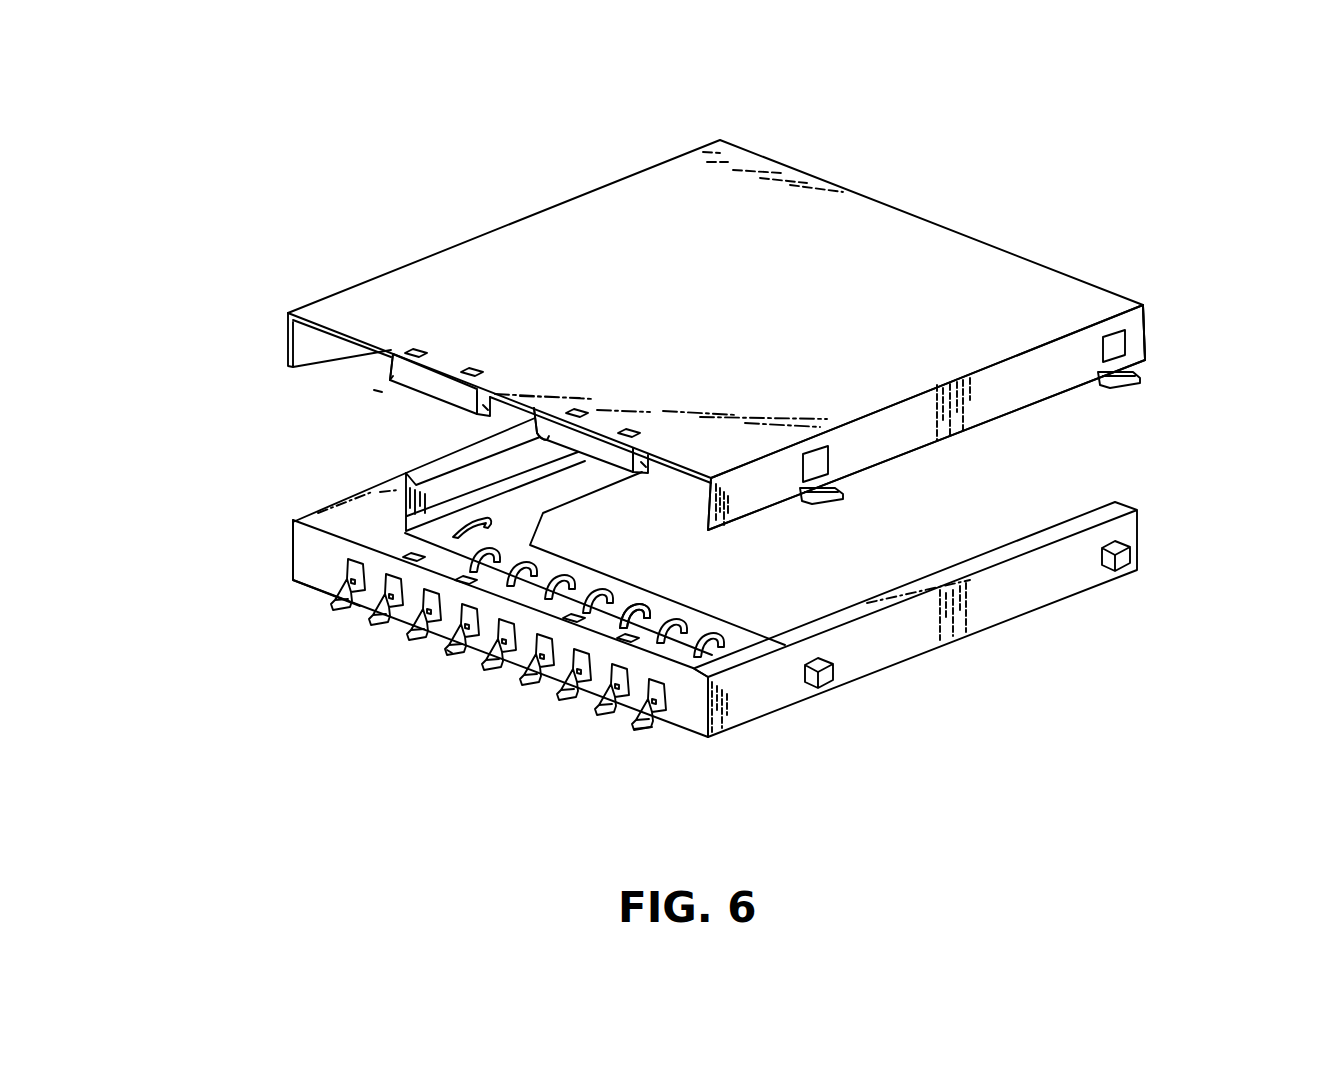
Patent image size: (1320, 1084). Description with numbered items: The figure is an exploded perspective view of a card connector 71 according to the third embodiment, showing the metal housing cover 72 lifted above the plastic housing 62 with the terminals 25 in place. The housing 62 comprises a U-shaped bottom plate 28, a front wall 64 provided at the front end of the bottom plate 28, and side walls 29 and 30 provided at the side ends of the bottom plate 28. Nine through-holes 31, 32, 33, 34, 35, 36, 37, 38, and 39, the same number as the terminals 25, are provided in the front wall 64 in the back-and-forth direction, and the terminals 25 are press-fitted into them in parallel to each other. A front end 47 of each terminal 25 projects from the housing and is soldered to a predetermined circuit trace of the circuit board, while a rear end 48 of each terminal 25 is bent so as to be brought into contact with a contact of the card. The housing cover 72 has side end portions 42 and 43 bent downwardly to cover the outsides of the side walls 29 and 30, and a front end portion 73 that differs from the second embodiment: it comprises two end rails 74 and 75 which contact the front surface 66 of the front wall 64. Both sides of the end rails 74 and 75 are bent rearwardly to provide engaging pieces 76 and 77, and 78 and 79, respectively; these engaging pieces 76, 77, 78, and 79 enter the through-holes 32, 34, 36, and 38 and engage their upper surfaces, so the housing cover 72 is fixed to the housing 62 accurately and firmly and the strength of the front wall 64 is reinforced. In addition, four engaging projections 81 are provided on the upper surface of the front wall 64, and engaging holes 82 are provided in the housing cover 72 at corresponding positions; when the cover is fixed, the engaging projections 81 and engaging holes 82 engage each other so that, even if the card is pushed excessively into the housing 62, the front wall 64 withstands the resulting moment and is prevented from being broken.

The terminal 25 is at (633, 732).
The bottom plate 28 is at (717, 637).
The side wall 29 is at (1055, 583).
The side wall 30 is at (406, 473).
The through-hole 31 is at (345, 585).
The through-hole 32 is at (380, 600).
The through-hole 33 is at (418, 615).
The through-hole 34 is at (447, 640).
The through-hole 35 is at (492, 655).
The through-hole 36 is at (522, 670).
The through-hole 37 is at (562, 685).
The through-hole 38 is at (599, 700).
The through-hole 39 is at (636, 715).
The side end portion 42 is at (1005, 395).
The side end portion 43 is at (300, 345).
The front end 47 is at (449, 648).
The rear end 48 is at (645, 612).
The housing 62 is at (997, 623).
The front wall 64 is at (700, 672).
The front surface 66 is at (315, 565).
The card connector 71 is at (1158, 284).
The housing cover 72 is at (966, 232).
The front end portion 73 is at (390, 380).
The end rail 74 is at (424, 384).
The end rail 75 is at (587, 446).
The engaging piece 76 is at (380, 389).
The engaging piece 77 is at (489, 412).
The engaging piece 78 is at (535, 420).
The engaging piece 79 is at (639, 463).
The engaging projection 81 is at (407, 555).
The engaging hole 82 is at (416, 348).